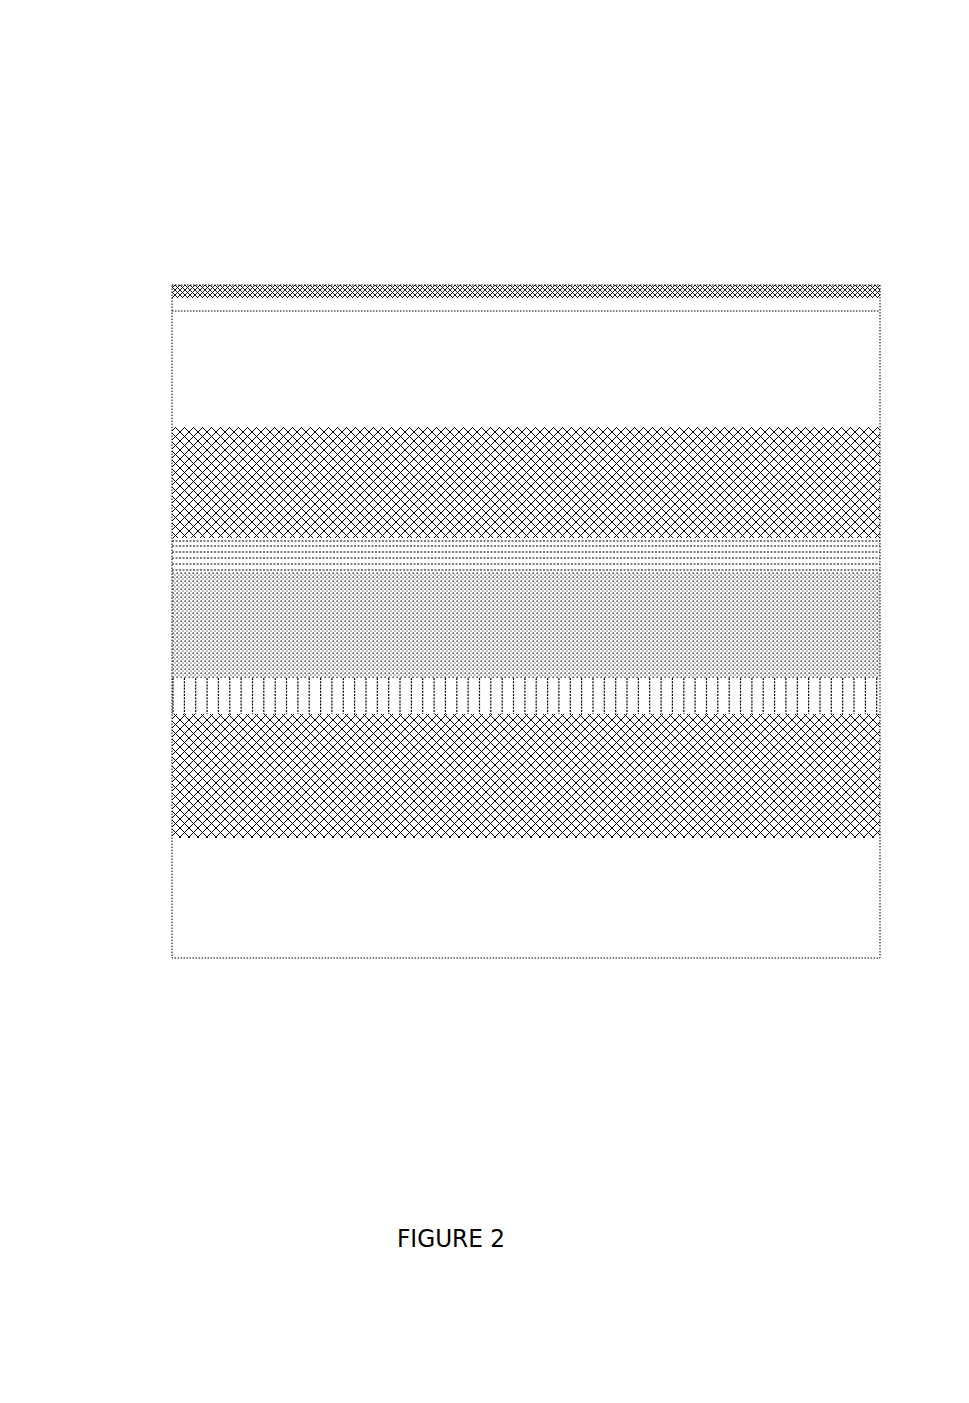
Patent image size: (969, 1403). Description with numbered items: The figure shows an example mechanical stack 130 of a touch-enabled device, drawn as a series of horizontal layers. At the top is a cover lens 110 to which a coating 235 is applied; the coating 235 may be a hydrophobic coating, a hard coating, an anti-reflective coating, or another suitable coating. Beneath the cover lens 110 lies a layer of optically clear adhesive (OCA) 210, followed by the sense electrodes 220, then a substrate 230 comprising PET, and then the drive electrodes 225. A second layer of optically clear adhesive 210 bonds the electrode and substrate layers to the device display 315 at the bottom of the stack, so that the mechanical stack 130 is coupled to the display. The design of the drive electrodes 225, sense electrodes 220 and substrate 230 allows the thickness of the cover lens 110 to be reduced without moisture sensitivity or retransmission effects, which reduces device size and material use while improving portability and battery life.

The mechanical stack 130 is at (527, 57).
The coating 235 is at (163, 298).
The cover lens 110 is at (163, 371).
The optically clear adhesive (OCA) 210 is at (163, 483).
The sense electrodes 220 is at (163, 553).
The substrate 230 is at (163, 625).
The drive electrodes 225 is at (163, 695).
The device display 315 is at (163, 896).